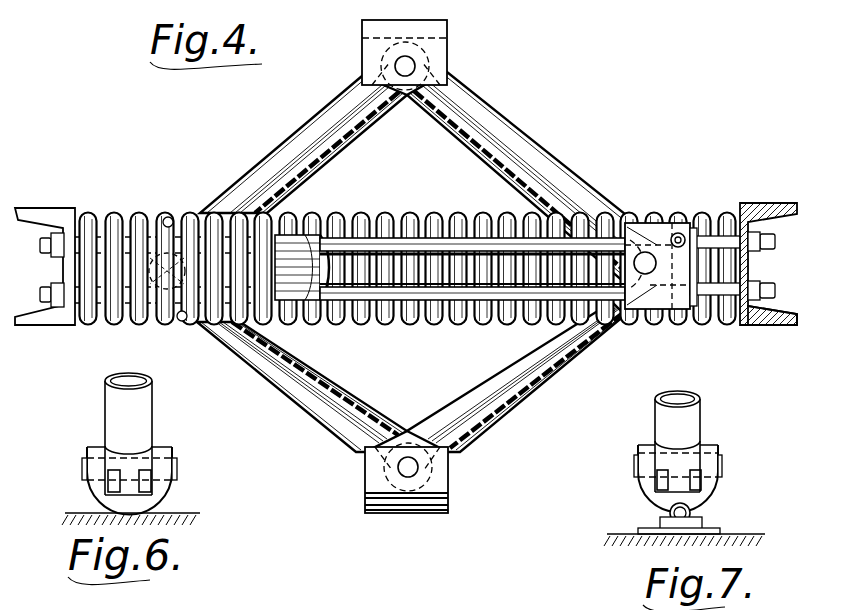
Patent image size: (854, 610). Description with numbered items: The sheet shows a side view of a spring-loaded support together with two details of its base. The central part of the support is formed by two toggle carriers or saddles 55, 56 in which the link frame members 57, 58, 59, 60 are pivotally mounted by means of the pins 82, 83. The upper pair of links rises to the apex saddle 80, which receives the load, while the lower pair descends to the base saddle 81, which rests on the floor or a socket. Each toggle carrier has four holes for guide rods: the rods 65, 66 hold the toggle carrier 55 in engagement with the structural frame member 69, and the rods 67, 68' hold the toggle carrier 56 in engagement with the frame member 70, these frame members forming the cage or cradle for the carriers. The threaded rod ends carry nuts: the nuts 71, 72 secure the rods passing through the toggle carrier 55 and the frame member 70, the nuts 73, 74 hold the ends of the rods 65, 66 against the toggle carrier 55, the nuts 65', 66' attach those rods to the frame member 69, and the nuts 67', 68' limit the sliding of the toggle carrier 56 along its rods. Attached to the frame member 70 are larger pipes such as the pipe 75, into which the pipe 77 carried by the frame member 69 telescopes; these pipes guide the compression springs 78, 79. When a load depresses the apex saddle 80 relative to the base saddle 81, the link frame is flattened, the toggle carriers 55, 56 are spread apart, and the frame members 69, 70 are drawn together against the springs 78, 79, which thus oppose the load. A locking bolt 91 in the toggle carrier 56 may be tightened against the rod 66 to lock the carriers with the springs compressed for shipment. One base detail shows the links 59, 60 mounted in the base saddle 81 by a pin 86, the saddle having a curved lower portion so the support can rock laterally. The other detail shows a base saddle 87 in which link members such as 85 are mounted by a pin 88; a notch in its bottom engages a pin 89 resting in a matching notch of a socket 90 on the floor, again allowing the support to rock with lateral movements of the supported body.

In FIG. 4, the toggle carrier 55 is at (164, 216).
In FIG. 4, the toggle carrier 56 is at (657, 226).
In FIG. 4, the link frame member 57 is at (294, 137).
In FIG. 4, the link frame member 58 is at (528, 134).
In FIG. 4, the link frame member 59 is at (264, 381).
In FIG. 6, the link frame member 59 is at (113, 422).
In FIG. 4, the link frame member 60 is at (531, 397).
In FIG. 4, the rod 65 is at (774, 281).
In FIG. 4, the nut 65' is at (772, 334).
In FIG. 4, the rod 66 is at (560, 237).
In FIG. 4, the nut 66' is at (768, 209).
In FIG. 4, the rod 67 is at (347, 282).
In FIG. 4, the nut 67' is at (678, 283).
In FIG. 4, the nut 68' is at (722, 226).
In FIG. 4, the structural frame member 69 is at (750, 266).
In FIG. 4, the frame member 70 is at (66, 272).
In FIG. 4, the nut 71 is at (61, 308).
In FIG. 4, the nut 72 is at (62, 236).
In FIG. 4, the nut 73 is at (125, 216).
In FIG. 4, the nut 74 is at (110, 326).
In FIG. 4, the pipe 75 is at (301, 318).
In FIG. 4, the pipe 77 is at (324, 230).
In FIG. 4, the compression spring 78 is at (414, 215).
In FIG. 4, the compression spring 79 is at (183, 322).
In FIG. 4, the apex saddle 80 is at (435, 48).
In FIG. 4, the base saddle 81 is at (438, 488).
In FIG. 6, the base saddle 81 is at (167, 491).
In FIG. 4, the pin 82 is at (644, 270).
In FIG. 4, the pin 83 is at (159, 320).
In FIG. 7, the link member 85 is at (658, 421).
In FIG. 4, the pin 86 is at (398, 467).
In FIG. 6, the pin 86 is at (177, 466).
In FIG. 7, the base saddle 87 is at (710, 493).
In FIG. 7, the pin 88 is at (724, 462).
In FIG. 7, the pin 89 is at (668, 511).
In FIG. 7, the socket 90 is at (702, 523).
In FIG. 4, the locking bolt 91 is at (681, 234).